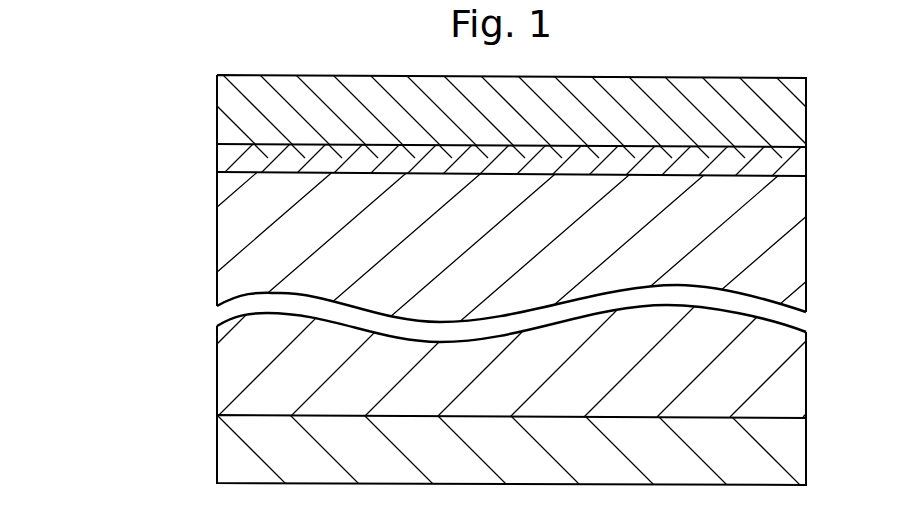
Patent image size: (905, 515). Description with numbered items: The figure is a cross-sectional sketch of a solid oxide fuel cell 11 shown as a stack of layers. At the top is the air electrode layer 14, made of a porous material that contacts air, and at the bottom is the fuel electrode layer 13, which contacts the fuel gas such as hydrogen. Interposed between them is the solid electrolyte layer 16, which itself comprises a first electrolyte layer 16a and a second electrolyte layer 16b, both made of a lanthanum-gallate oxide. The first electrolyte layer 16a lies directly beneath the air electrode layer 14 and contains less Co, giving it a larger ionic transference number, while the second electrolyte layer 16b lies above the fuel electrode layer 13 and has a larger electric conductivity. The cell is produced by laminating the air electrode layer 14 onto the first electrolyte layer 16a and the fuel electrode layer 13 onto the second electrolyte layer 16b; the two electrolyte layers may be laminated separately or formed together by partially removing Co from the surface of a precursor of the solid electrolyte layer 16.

The solid oxide fuel cell 11 is at (82, 100).
The air electrode layer 14 is at (218, 102).
The solid electrolyte layer 16 is at (132, 142).
The first electrolyte layer 16a is at (219, 158).
The second electrolyte layer 16b is at (219, 252).
The fuel electrode layer 13 is at (215, 440).